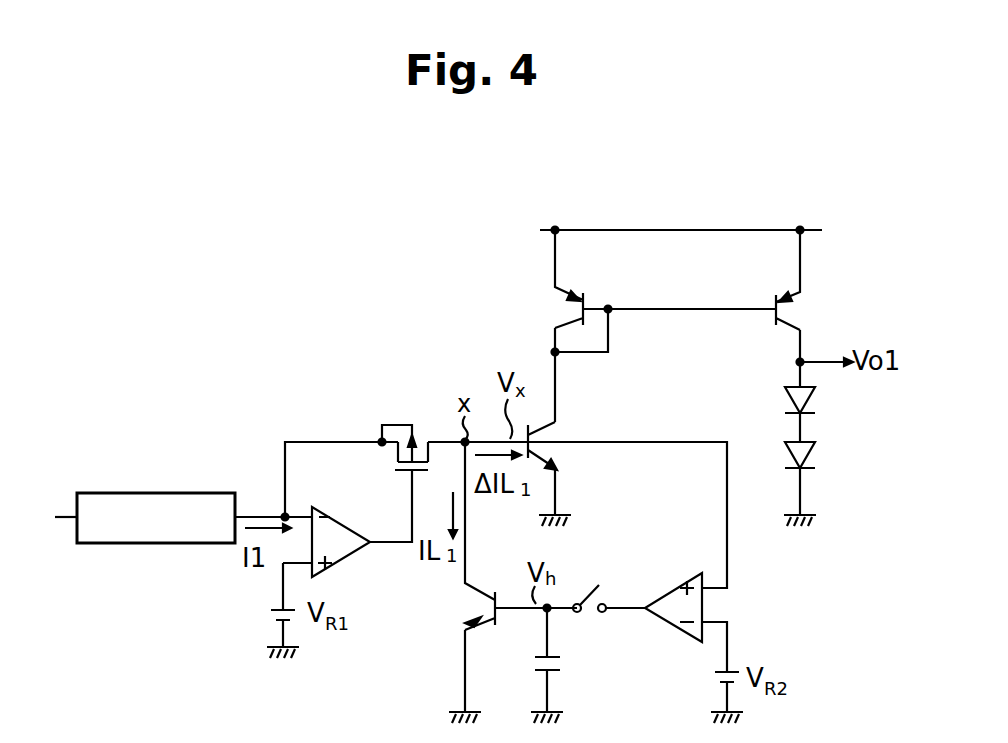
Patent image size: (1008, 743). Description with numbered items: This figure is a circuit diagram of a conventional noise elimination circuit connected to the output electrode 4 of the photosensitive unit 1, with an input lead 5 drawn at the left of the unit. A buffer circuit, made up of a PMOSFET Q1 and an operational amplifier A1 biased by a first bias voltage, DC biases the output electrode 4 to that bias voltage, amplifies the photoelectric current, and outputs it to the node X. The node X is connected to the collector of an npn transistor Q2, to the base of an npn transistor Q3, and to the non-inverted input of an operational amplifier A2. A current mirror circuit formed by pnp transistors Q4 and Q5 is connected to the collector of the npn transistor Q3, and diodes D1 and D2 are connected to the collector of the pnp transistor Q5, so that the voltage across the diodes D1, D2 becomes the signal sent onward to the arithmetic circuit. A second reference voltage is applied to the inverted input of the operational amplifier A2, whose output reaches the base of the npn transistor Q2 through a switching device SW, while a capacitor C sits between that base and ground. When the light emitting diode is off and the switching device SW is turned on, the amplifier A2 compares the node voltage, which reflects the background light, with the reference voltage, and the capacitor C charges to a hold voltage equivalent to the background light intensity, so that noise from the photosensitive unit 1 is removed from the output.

The photosensitive unit 1 is at (176, 492).
The output electrode 4 is at (257, 516).
The input lead 5 is at (62, 517).
The PMOSFET Q1 is at (423, 440).
The npn transistor Q2 is at (485, 609).
The npn transistor Q3 is at (540, 437).
The pnp transistor Q4 is at (572, 307).
The pnp transistor Q5 is at (788, 310).
The operational amplifier A1 is at (360, 527).
The operational amplifier A2 is at (673, 589).
The capacitor C is at (537, 665).
The switching device SW is at (598, 616).
The diode D1 is at (819, 399).
The diode D2 is at (819, 454).